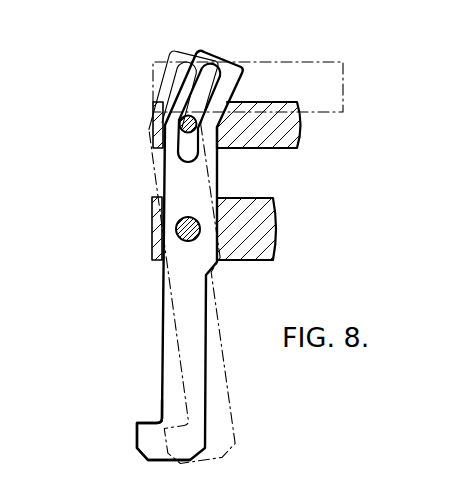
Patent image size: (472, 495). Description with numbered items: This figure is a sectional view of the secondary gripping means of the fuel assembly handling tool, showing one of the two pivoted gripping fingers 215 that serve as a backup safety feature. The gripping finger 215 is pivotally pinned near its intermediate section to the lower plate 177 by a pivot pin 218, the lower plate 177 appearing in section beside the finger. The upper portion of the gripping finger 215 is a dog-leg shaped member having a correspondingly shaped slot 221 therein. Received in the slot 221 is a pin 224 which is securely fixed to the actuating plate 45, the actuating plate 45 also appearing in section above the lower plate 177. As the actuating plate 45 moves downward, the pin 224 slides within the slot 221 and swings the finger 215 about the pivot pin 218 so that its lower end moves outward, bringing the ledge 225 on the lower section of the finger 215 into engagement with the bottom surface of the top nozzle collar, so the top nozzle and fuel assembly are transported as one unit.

The gripping finger 215 is at (205, 402).
The slot 221 is at (213, 67).
The pin 224 is at (179, 125).
The pivot pin 218 is at (176, 229).
The ledge 225 is at (150, 422).
The actuating plate 45 is at (283, 128).
The lower plate 177 is at (263, 232).